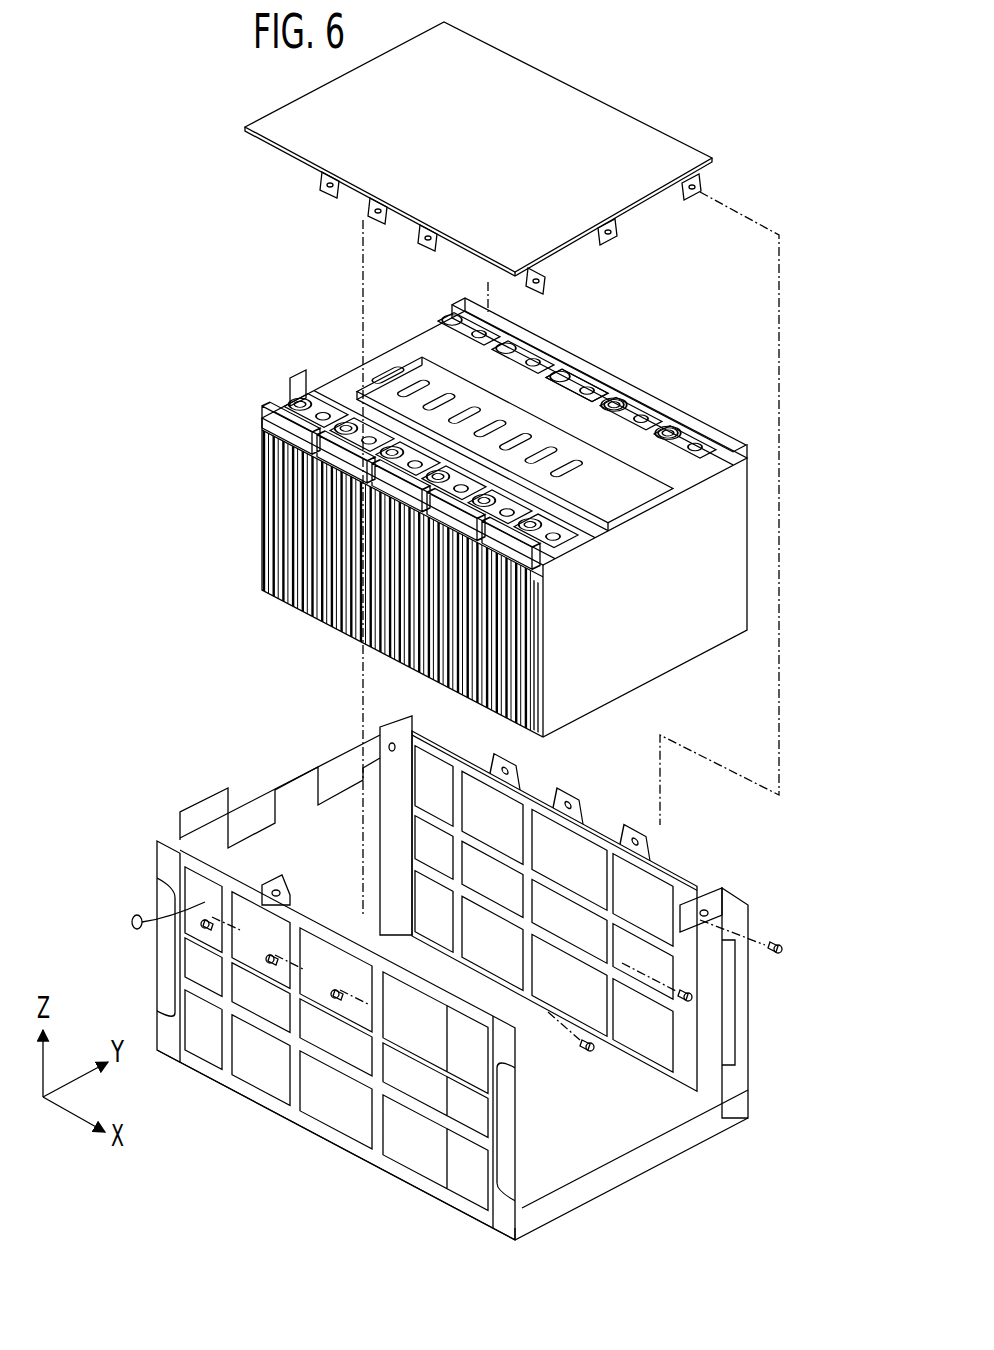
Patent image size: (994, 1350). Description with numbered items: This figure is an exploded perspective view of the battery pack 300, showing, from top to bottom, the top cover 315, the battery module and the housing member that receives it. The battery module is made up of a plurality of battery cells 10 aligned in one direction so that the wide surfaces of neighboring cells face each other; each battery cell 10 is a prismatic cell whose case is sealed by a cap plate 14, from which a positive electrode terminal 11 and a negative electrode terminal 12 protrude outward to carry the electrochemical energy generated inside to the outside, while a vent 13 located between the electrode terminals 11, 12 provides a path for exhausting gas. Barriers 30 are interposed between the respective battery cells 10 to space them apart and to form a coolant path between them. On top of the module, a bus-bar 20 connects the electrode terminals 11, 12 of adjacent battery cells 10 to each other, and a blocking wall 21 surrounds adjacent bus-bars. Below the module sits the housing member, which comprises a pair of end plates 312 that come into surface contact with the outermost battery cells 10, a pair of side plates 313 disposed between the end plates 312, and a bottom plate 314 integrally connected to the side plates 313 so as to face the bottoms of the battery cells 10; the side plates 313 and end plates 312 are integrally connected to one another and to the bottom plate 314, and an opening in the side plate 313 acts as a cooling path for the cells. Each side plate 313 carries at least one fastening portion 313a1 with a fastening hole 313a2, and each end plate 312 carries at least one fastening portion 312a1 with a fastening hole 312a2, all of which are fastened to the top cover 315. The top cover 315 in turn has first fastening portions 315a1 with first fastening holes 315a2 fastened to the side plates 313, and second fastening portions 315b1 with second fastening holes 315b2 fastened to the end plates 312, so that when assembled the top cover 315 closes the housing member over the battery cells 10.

The battery pack 300 is at (757, 95).
The top cover 315 is at (590, 90).
The first fastening portion 315a1 is at (322, 180).
The first fastening hole 315a2 is at (362, 195).
The second fastening portion 315b1 is at (702, 183).
The second fastening hole 315b2 is at (690, 192).
The battery cell 10 is at (293, 600).
The barrier 30 is at (347, 615).
The vent 13 is at (372, 382).
The cap plate 14 is at (402, 350).
The bus-bar 20 is at (504, 430).
The blocking wall 21 is at (577, 385).
The positive electrode terminal 11 is at (614, 404).
The negative electrode terminal 12 is at (668, 432).
The end plate 312 is at (700, 1030).
The fastening portion 312a1 is at (712, 895).
The fastening hole 312a2 is at (708, 912).
The side plate 313 is at (597, 832).
The fastening portion 313a1 is at (268, 890).
The fastening hole 313a2 is at (275, 892).
The bottom plate 314 is at (690, 1135).